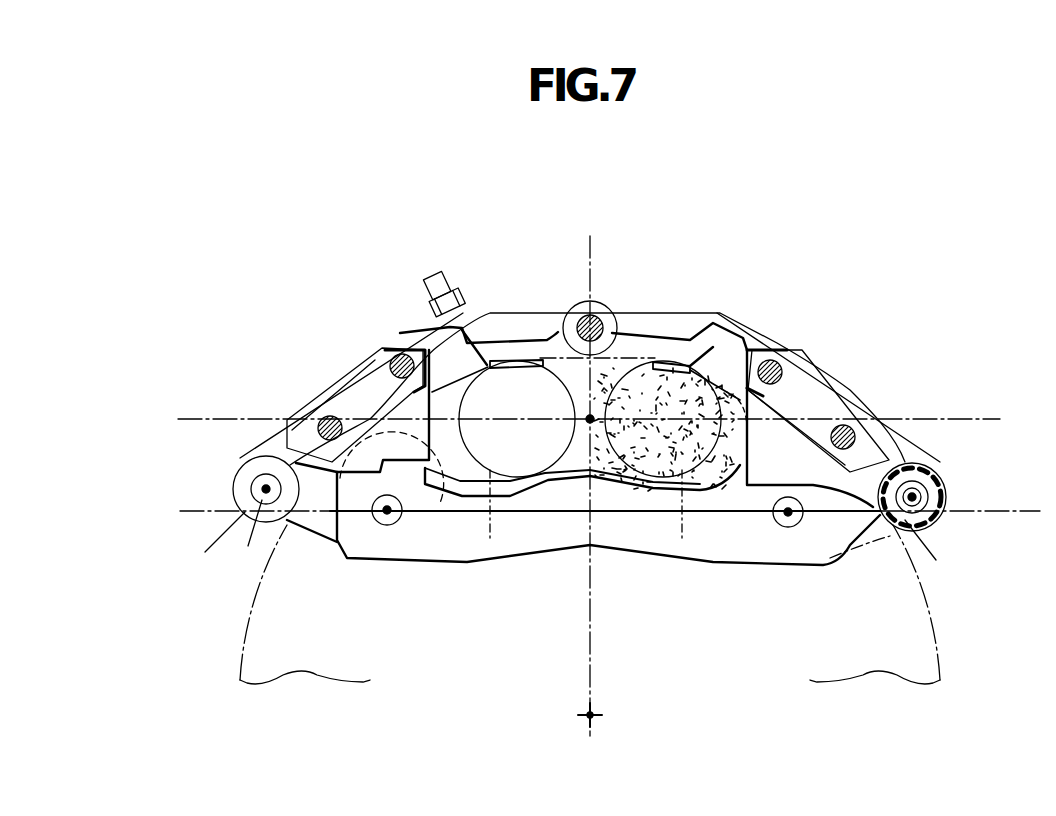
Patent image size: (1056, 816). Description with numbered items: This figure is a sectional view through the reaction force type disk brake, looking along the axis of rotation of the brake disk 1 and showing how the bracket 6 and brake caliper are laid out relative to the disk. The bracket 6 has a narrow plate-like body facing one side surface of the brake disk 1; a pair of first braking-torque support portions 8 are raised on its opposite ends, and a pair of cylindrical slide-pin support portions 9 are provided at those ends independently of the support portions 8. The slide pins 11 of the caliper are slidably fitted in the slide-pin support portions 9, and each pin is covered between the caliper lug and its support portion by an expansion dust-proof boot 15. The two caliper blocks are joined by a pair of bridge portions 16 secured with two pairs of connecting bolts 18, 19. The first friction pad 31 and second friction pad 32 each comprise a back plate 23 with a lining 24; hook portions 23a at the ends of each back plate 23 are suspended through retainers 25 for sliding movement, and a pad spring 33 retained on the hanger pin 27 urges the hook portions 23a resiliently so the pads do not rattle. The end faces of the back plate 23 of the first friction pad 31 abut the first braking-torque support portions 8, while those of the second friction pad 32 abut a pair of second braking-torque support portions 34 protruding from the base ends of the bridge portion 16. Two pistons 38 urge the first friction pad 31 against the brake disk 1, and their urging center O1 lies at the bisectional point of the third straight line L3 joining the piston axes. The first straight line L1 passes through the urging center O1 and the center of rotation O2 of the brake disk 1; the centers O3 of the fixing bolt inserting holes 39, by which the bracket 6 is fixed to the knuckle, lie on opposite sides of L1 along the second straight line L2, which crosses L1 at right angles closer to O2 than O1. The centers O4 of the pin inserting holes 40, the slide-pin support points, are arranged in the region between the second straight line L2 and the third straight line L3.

The brake disk 1 is at (240, 653).
The bracket 6 is at (465, 566).
The first braking-torque support portion 8 is at (350, 410).
The slide-pin support portion 9 is at (217, 546).
The slide pin 11 is at (595, 545).
The expansion dust-proof boot 15 is at (946, 497).
The bridge portion 16 is at (322, 398).
The connecting bolt 18 is at (393, 360).
The connecting bolt 19 is at (318, 428).
The back plate 23 is at (465, 356).
The hook portion 23a is at (415, 338).
The lining 24 is at (600, 484).
The retainer 25 is at (405, 340).
The hanger pin 27 is at (601, 330).
The first friction pad 31 is at (543, 486).
The second friction pad 32 is at (652, 494).
The pad spring 33 is at (482, 318).
The second braking-torque support portion 34 is at (735, 470).
The piston 38 is at (492, 540).
The fixing bolt inserting hole 39 is at (386, 522).
The pin inserting hole 40 is at (265, 486).
The urging center O1 is at (588, 417).
The center of rotation O2 is at (593, 713).
The center of fixing bolt inserting hole O3 is at (392, 518).
The center of pin inserting hole O4 is at (264, 490).
The first straight line L1 is at (586, 248).
The second straight line L2 is at (1032, 518).
The third straight line L3 is at (968, 417).